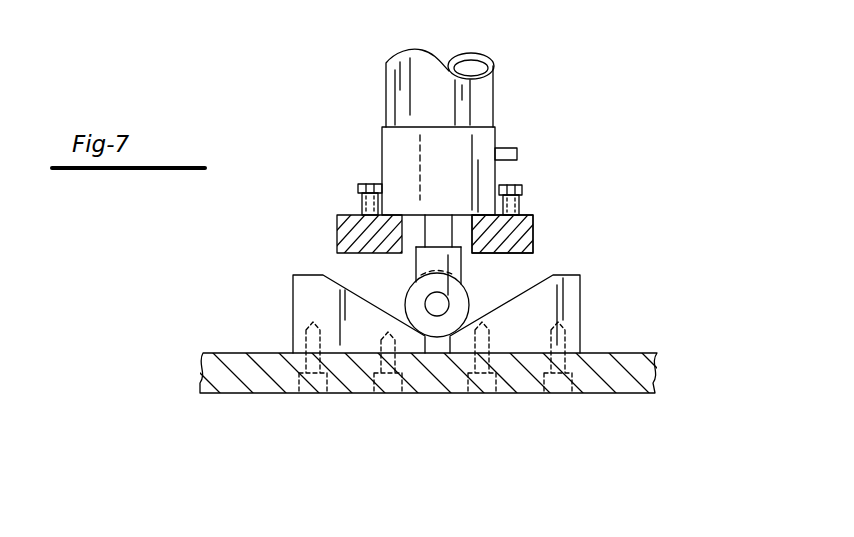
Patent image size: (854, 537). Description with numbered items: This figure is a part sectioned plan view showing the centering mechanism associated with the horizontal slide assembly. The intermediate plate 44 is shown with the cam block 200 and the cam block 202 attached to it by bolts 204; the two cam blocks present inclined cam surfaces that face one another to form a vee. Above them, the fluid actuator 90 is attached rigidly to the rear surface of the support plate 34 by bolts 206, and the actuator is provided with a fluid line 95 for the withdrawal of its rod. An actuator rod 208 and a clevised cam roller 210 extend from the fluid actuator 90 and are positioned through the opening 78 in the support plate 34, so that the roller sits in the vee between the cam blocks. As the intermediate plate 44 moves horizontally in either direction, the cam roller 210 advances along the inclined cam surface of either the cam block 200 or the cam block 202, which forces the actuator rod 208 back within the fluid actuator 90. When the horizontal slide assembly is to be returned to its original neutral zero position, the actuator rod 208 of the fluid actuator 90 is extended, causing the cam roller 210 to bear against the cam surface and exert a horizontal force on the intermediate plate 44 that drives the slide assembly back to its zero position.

The support plate 34 is at (536, 243).
The intermediate plate 44 is at (630, 354).
The opening 78 is at (500, 232).
The fluid actuator 90 is at (496, 138).
The fluid line 95 is at (518, 158).
The cam block 200 is at (294, 311).
The cam block 202 is at (578, 293).
The bolts 204 is at (314, 394).
The bolts 206 is at (363, 184).
The actuator rod 208 is at (424, 233).
The clevised cam roller 210 is at (416, 260).